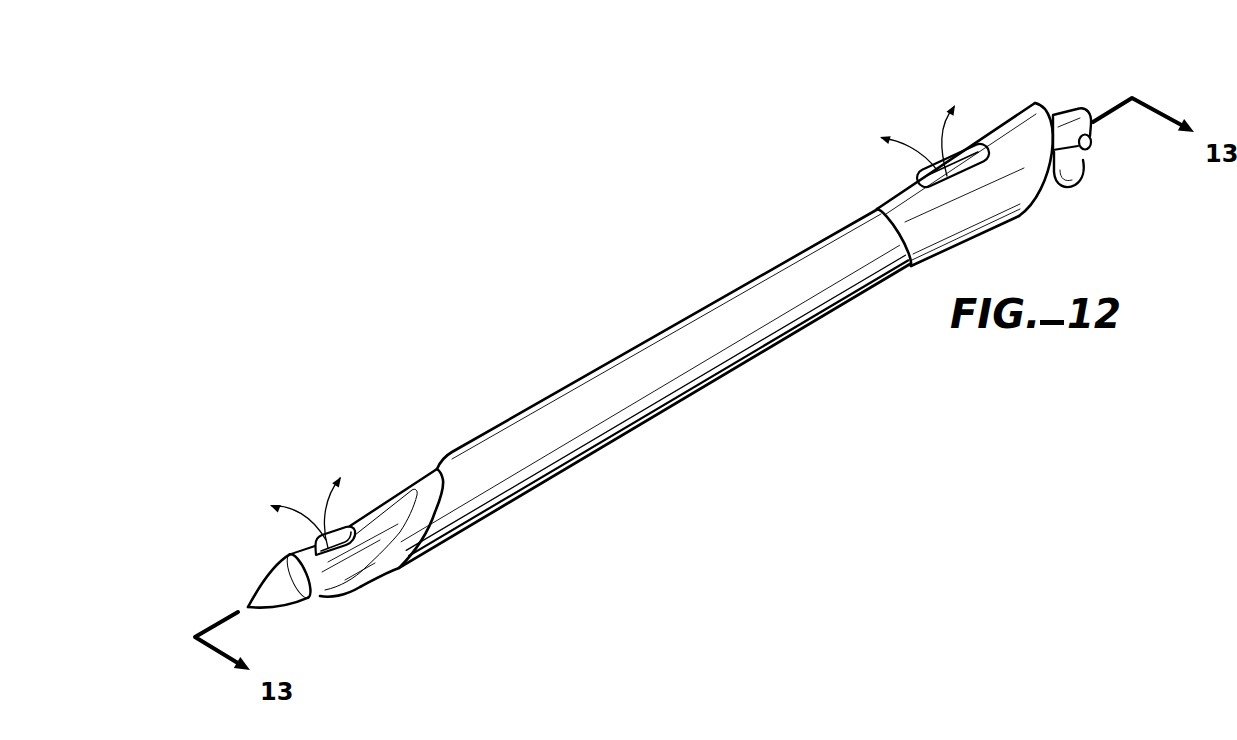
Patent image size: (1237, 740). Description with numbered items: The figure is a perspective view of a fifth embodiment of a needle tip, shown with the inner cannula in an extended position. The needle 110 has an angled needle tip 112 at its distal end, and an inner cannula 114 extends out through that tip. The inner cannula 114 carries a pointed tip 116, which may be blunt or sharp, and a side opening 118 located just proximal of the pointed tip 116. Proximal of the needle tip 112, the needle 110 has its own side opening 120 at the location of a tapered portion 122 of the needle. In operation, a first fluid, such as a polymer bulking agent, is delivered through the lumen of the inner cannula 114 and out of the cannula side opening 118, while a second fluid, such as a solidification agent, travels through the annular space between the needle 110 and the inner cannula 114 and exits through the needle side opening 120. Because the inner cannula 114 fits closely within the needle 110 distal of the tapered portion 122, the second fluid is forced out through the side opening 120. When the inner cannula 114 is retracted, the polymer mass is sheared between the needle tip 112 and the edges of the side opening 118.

The needle 110 is at (650, 355).
The angled needle tip 112 is at (367, 570).
The inner cannula 114 is at (368, 525).
The pointed tip 116 is at (278, 598).
The side opening 118 is at (324, 545).
The side opening 120 is at (957, 162).
The tapered portion 122 is at (967, 213).